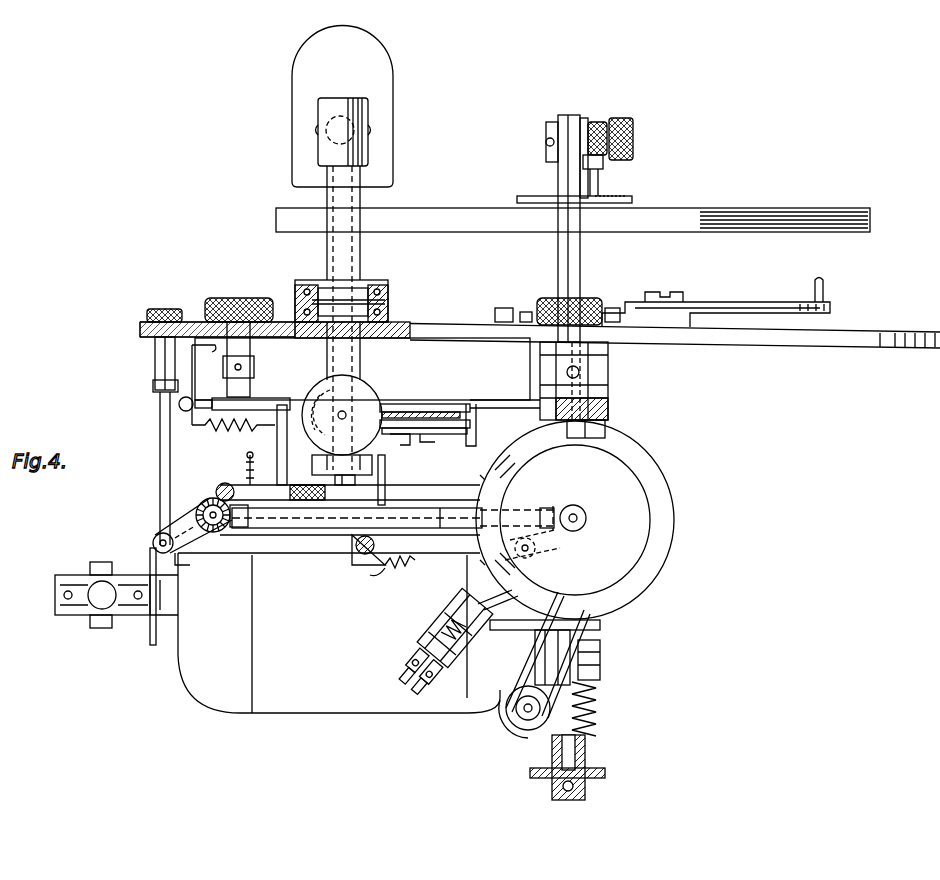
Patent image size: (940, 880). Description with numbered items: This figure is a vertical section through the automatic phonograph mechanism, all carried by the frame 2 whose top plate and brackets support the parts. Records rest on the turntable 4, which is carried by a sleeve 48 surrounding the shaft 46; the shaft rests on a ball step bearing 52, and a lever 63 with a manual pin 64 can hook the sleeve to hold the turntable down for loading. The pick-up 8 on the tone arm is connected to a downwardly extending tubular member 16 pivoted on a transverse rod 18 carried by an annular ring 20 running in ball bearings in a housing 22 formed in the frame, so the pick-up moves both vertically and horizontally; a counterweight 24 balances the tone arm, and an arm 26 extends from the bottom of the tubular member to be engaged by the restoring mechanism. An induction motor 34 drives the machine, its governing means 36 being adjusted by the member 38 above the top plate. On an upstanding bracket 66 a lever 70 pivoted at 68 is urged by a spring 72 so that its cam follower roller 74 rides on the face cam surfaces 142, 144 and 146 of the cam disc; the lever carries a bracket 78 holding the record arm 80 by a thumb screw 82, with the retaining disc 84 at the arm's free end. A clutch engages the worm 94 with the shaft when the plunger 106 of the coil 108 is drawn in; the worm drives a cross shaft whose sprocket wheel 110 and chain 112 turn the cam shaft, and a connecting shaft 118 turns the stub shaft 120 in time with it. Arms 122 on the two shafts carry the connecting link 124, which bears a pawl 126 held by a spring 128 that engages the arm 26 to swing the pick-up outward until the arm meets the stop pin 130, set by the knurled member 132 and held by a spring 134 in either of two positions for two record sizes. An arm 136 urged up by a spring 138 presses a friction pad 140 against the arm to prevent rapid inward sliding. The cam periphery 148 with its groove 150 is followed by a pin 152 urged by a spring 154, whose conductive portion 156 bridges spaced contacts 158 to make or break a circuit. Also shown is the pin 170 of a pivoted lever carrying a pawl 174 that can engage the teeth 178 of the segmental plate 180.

The frame 2 is at (870, 330).
The turntable 4 is at (698, 210).
The pick-up 8 is at (300, 76).
The tubular member 16 is at (360, 250).
The transverse rod 18 is at (385, 290).
The annular ring 20 is at (388, 303).
The housing 22 is at (298, 283).
The counterweight 24 is at (312, 388).
The arm 26 is at (362, 480).
The motor 34 is at (318, 708).
The governing means 36 is at (100, 628).
The adjusting member 38 is at (165, 306).
The shaft 46 is at (578, 760).
The sleeve 48 is at (584, 280).
The ball step bearing 52 is at (552, 784).
The lever 63 is at (738, 300).
The pin 64 is at (825, 290).
The upstanding bracket 66 is at (546, 130).
The pivot 68 is at (602, 120).
The lever 70 is at (561, 114).
The spring 72 is at (592, 372).
The cam follower roller 74 is at (606, 430).
The bracket 78 is at (602, 164).
The record arm 80 is at (584, 116).
The thumb screw 82 is at (632, 118).
The retaining disc 84 is at (623, 196).
The worm 94 is at (600, 702).
The plunger 106 is at (602, 654).
The coil 108 is at (603, 624).
The sprocket wheel 110 is at (520, 714).
The chain 112 is at (515, 670).
The connecting shaft 118 is at (442, 512).
The stub shaft 120 is at (212, 498).
The arms 122 is at (178, 520).
The connecting link 124 is at (290, 548).
The pawl 126 is at (357, 538).
The spring 128 is at (383, 576).
The stop pin 130 is at (280, 445).
The knurled member 132 is at (228, 296).
The spring 134 is at (233, 435).
The arm 136 is at (300, 488).
The spring 138 is at (248, 468).
The friction pad 140 is at (325, 492).
The cam surface 142 is at (664, 548).
The cam surface 144 is at (508, 566).
The cam surface 146 is at (505, 484).
The cam surface 148 is at (640, 592).
The groove 150 is at (520, 595).
The pin 152 is at (488, 604).
The spring 154 is at (455, 618).
The conductive portion 156 is at (430, 645).
The contacts 158 is at (428, 680).
The pin 170 is at (385, 494).
The pawl 174 is at (476, 428).
The teeth 178 is at (385, 412).
The segmental plate 180 is at (428, 408).